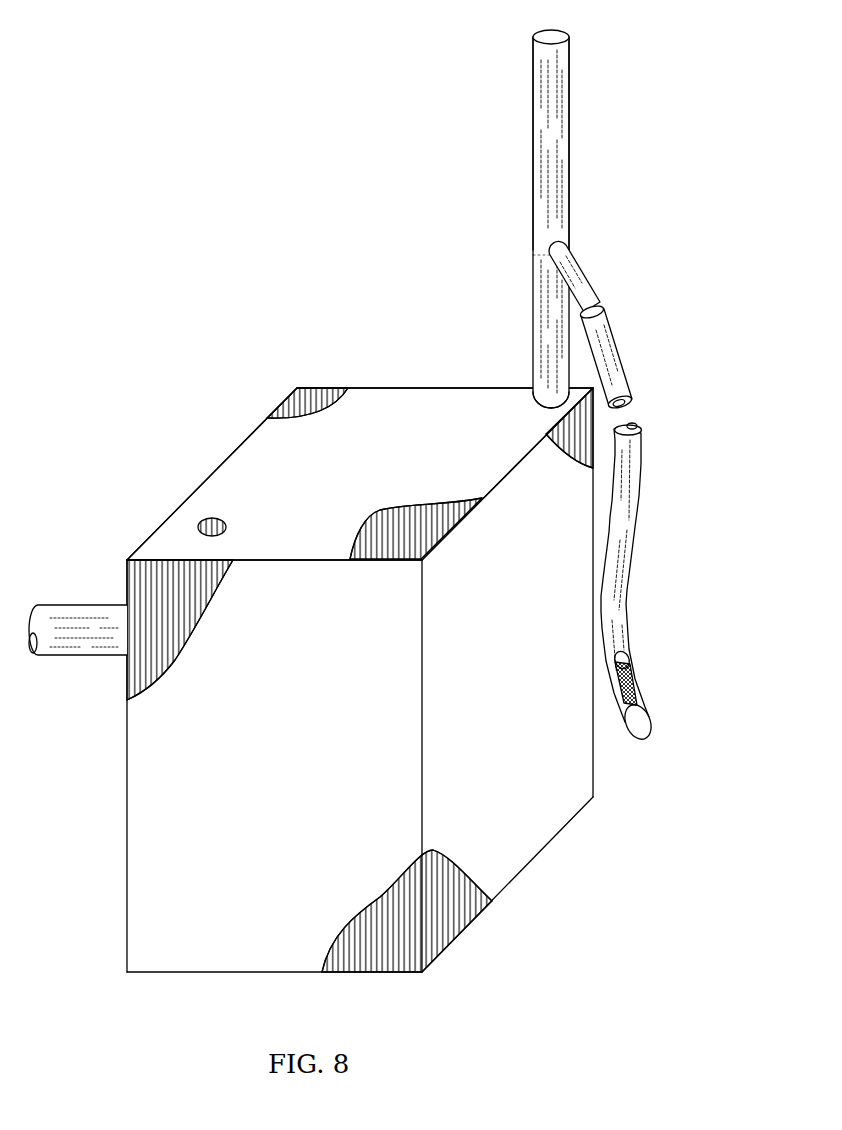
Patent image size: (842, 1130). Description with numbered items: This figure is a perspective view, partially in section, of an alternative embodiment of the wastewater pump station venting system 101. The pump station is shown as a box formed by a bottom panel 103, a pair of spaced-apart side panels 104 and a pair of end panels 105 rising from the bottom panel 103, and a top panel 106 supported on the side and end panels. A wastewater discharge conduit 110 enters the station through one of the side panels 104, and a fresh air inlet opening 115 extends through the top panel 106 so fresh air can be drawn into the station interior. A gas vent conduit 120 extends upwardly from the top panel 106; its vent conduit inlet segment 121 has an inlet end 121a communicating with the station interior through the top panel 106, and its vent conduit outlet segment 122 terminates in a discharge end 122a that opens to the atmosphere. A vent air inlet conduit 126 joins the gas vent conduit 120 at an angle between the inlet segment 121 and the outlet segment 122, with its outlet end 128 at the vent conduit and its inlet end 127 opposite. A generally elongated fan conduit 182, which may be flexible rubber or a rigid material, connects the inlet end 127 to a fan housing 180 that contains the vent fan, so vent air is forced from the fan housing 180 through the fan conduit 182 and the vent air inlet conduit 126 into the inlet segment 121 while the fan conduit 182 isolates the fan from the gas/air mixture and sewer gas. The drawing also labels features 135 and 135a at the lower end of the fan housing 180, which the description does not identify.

The wastewater pump station venting system 101 is at (205, 332).
The bottom panel 103 is at (520, 870).
The side panel 104 is at (225, 455).
The end panel 105 is at (395, 388).
The top panel 106 is at (470, 402).
The wastewater discharge conduit 110 is at (92, 572).
The fresh air inlet opening 115 is at (222, 518).
The gas vent conduit 120 is at (550, 235).
The vent conduit inlet segment 121 is at (545, 310).
The inlet end 121a is at (546, 408).
The vent conduit outlet segment 122 is at (545, 148).
The discharge end 122a is at (560, 37).
The vent air inlet conduit 126 is at (563, 262).
The inlet end 127 is at (602, 312).
The outlet end 128 is at (548, 255).
The hose end cap 135 is at (630, 660).
The end cap grip region 135a is at (633, 681).
The fan housing 180 is at (664, 583).
The fan conduit 182 is at (632, 334).